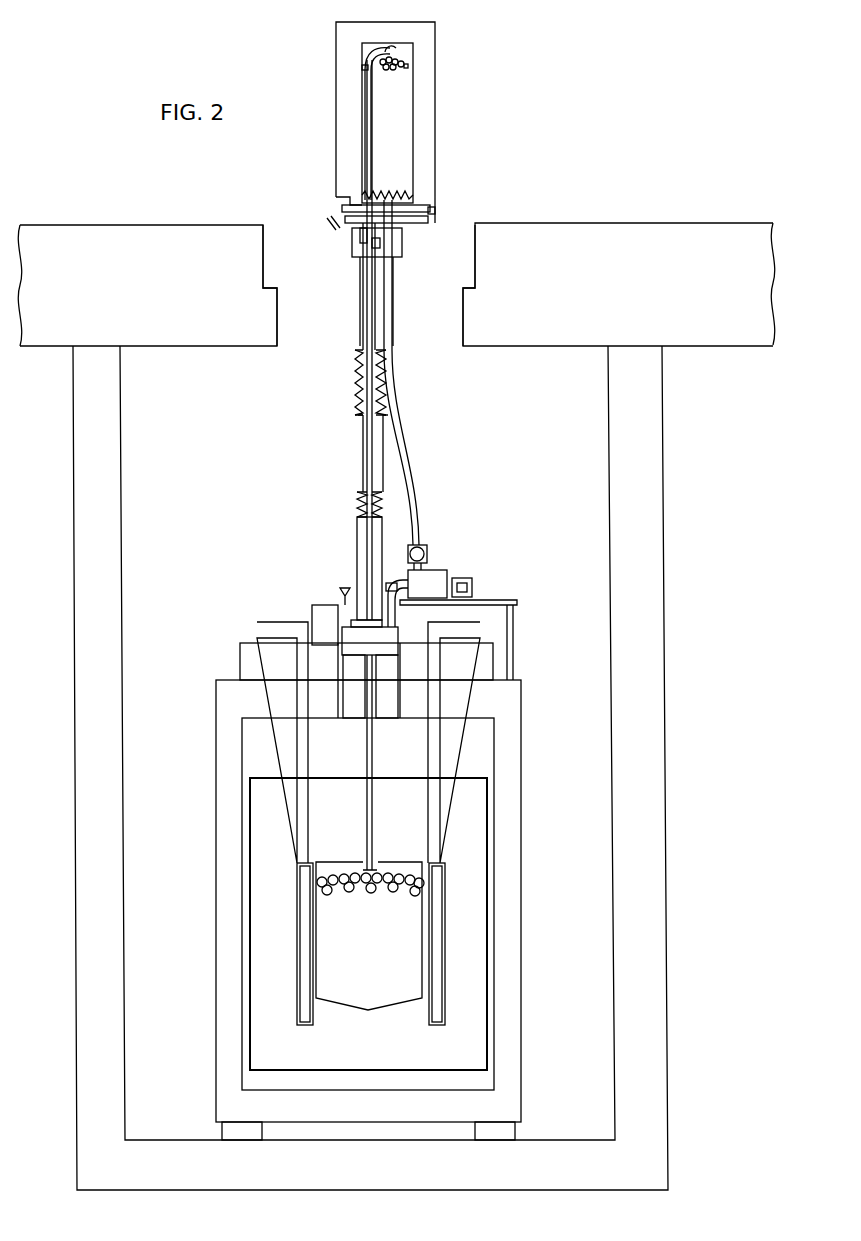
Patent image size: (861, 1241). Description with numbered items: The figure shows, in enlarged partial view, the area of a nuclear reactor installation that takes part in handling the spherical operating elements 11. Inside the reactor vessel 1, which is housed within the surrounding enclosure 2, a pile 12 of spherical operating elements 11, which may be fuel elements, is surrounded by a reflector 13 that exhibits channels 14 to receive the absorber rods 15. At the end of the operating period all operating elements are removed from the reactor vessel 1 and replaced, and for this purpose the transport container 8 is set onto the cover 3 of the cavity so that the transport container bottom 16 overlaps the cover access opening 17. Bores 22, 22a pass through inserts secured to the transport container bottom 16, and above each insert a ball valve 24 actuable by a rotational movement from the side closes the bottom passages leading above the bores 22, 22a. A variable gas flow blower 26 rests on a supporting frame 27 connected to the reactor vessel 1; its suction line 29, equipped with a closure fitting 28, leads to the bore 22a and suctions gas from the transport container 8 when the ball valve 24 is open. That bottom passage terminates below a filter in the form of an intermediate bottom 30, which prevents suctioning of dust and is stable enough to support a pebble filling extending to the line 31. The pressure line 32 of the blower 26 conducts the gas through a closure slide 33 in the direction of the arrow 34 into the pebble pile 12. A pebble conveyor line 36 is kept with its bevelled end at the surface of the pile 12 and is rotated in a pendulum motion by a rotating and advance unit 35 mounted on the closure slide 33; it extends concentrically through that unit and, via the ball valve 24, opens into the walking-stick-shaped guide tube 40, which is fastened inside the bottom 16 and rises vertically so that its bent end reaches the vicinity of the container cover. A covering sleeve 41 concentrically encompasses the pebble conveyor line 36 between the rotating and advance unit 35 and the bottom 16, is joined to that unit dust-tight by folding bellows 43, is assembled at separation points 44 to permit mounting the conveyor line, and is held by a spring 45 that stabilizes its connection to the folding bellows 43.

The reactor vessel 1 is at (203, 811).
The enclosure housing 2 is at (658, 613).
The cover 3 is at (665, 247).
The transport container 8 is at (345, 93).
The spherical operating elements 11 is at (400, 876).
The pile 12 is at (383, 940).
The reflector 13 is at (470, 915).
The channels 14 is at (440, 797).
The absorber rods 15 is at (438, 972).
The transport container bottom 16 is at (414, 225).
The cover access opening 17 is at (356, 244).
The bore 22 is at (338, 268).
The bore 22a is at (405, 268).
The ball valve 24 is at (430, 208).
The variable gas flow blower 26 is at (448, 578).
The supporting frame 27 is at (500, 600).
The closure fitting 28 is at (424, 548).
The suction line 29 is at (406, 463).
The intermediate bottom 30 is at (410, 192).
The line 31 is at (412, 52).
The pressure line 32 is at (395, 572).
The closure slide 33 is at (324, 612).
The arrow 34 is at (378, 631).
The rotating and advance unit 35 is at (357, 541).
The pebble conveyor line 36 is at (367, 468).
The guide tube 40 is at (365, 129).
The covering sleeve 41 is at (362, 440).
The folding bellows 43 is at (357, 507).
The separation points 44 is at (358, 363).
The spring 45 is at (356, 395).